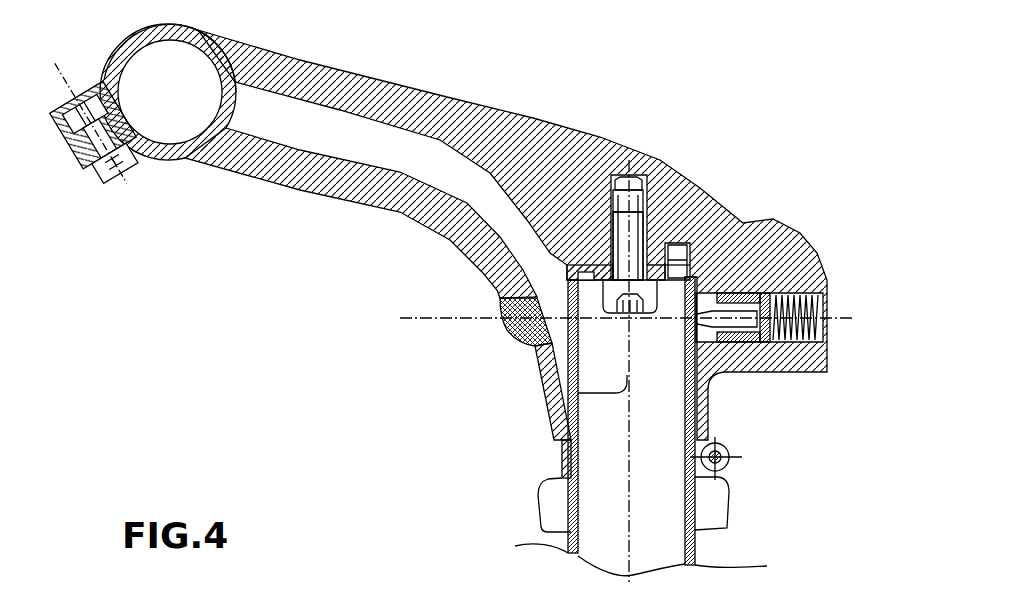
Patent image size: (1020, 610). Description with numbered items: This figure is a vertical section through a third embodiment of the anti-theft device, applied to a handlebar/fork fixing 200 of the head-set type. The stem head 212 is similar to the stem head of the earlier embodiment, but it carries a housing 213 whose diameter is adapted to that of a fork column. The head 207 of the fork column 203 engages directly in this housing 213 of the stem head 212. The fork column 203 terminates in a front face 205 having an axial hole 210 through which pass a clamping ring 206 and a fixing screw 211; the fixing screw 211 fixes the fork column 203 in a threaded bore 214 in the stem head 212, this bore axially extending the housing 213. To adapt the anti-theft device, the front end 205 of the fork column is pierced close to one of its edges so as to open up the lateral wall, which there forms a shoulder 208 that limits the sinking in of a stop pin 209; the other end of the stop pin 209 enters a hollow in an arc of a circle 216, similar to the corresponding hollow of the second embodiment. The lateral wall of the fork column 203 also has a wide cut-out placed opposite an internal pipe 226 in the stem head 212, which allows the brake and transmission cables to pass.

The stem head 212 is at (438, 108).
The internal pipe 226 is at (322, 140).
The threaded bore 214 is at (641, 183).
The fixing screw 211 is at (641, 222).
The axial hole 210 is at (676, 247).
The hollow in an arc of a circle 216 is at (686, 262).
The stop pin 209 is at (693, 280).
The shoulder 208 is at (733, 237).
The front face 205 is at (570, 268).
The clamping ring 206 is at (598, 283).
The head of the fork column 207 is at (594, 342).
The housing 213 is at (696, 398).
The fixing 200 is at (732, 494).
The fork column 203 is at (697, 547).